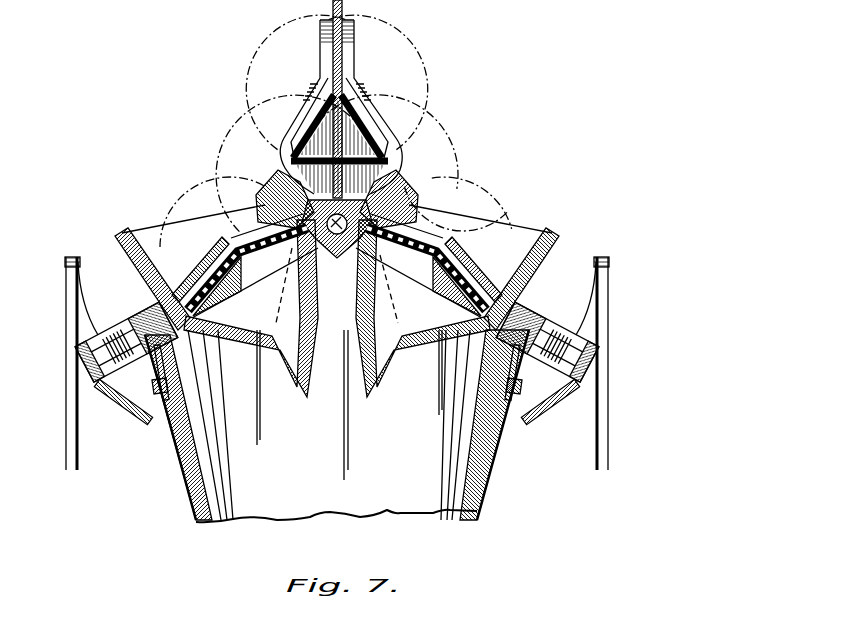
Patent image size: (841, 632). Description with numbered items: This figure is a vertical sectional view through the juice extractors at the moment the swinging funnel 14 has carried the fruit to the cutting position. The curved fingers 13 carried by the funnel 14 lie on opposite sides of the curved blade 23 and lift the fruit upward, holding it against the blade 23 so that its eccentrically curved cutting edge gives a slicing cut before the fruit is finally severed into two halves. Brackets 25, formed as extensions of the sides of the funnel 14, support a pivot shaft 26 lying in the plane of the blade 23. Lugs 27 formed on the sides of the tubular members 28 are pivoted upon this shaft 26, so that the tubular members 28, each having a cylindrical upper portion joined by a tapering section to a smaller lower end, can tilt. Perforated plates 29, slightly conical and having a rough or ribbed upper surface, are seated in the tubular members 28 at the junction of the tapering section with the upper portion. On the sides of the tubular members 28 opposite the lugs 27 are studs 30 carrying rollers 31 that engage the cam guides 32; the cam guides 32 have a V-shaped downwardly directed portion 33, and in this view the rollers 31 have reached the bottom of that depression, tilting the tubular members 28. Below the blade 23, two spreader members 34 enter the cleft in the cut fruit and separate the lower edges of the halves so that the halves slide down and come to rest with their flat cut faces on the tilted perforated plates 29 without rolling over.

The curved blade 23 is at (343, 7).
The curved fingers 13 is at (321, 72).
The spreader members 34 is at (322, 118).
The pivot shaft 26 is at (252, 226).
The lugs 27 is at (338, 271).
The brackets 25 is at (388, 265).
The perforated plates 29 is at (211, 272).
The tubular members 28 is at (146, 279).
The studs 30 is at (110, 319).
The rollers 31 is at (107, 386).
The cam guides 32 is at (66, 436).
The V-shaped downwardly directed portion 33 is at (141, 422).
The swinging funnel 14 is at (484, 482).